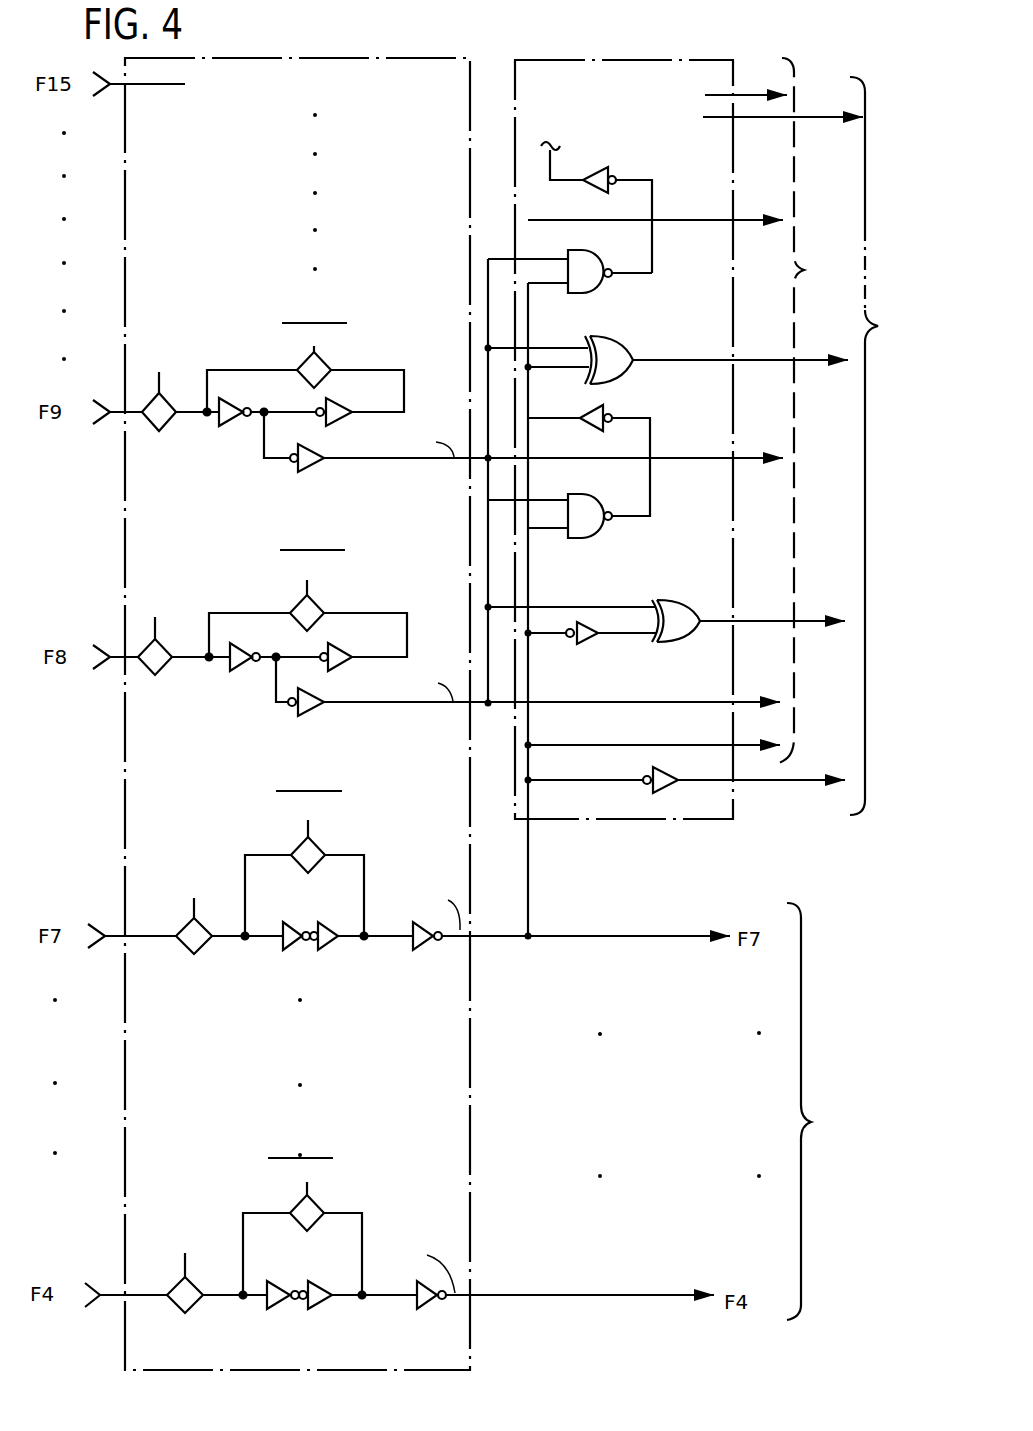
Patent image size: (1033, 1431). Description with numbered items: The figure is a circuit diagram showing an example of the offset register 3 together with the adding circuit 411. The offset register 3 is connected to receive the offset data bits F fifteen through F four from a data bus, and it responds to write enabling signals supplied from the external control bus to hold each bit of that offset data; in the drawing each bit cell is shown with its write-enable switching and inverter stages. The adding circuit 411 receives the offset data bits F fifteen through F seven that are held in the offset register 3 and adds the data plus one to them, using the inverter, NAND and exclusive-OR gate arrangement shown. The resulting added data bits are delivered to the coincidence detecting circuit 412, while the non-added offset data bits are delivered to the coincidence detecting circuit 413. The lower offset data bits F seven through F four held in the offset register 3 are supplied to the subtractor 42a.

The offset register 3 is at (389, 58).
The adding circuit 411 is at (680, 59).
The coincidence detecting circuit 412 is at (880, 446).
The coincidence detecting circuit 413 is at (817, 410).
The subtractor 42a is at (817, 1111).